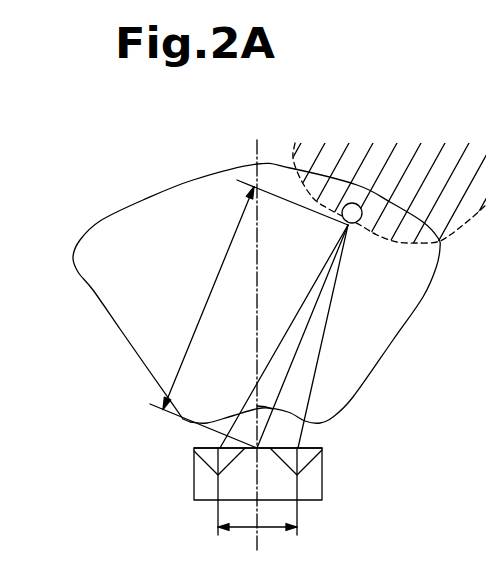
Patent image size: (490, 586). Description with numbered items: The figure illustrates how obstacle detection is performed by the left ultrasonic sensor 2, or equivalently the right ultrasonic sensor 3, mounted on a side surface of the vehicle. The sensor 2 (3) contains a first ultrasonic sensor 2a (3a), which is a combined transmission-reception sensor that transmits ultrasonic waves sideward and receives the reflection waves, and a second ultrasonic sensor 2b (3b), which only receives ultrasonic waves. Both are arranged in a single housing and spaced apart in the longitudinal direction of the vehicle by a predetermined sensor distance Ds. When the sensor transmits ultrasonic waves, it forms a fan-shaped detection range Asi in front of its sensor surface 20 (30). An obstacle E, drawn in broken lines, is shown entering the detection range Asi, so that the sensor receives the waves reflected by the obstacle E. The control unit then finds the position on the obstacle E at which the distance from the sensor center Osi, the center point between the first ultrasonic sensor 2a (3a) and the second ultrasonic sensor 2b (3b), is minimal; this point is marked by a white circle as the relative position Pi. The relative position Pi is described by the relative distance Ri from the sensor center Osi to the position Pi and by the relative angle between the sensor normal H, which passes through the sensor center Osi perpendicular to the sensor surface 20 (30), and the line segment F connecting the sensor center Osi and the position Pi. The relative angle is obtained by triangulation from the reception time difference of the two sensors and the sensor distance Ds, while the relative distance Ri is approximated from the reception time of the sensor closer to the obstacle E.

The left ultrasonic sensor 2 is at (297, 474).
The right ultrasonic sensor 3 is at (322, 483).
The first ultrasonic sensor 2a is at (162, 461).
The first ultrasonic sensor 3a is at (194, 460).
The second ultrasonic sensor 2b is at (349, 458).
The second ultrasonic sensor 3b is at (323, 458).
The sensor surface 20 is at (311, 432).
The sensor surface 30 is at (322, 448).
The detection range Asi is at (397, 325).
The obstacle E is at (457, 233).
The relative position Pi is at (360, 224).
The line segment F is at (314, 307).
The relative distance Ri is at (203, 317).
The sensor normal H is at (257, 150).
The sensor center Osi is at (257, 469).
The sensor distance Ds is at (257, 491).